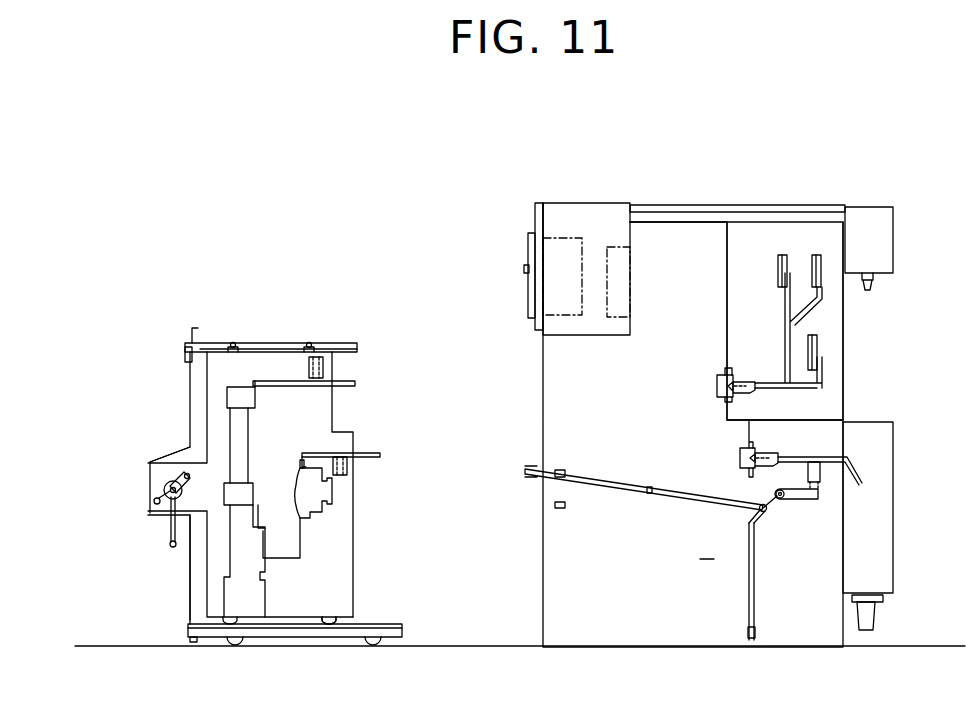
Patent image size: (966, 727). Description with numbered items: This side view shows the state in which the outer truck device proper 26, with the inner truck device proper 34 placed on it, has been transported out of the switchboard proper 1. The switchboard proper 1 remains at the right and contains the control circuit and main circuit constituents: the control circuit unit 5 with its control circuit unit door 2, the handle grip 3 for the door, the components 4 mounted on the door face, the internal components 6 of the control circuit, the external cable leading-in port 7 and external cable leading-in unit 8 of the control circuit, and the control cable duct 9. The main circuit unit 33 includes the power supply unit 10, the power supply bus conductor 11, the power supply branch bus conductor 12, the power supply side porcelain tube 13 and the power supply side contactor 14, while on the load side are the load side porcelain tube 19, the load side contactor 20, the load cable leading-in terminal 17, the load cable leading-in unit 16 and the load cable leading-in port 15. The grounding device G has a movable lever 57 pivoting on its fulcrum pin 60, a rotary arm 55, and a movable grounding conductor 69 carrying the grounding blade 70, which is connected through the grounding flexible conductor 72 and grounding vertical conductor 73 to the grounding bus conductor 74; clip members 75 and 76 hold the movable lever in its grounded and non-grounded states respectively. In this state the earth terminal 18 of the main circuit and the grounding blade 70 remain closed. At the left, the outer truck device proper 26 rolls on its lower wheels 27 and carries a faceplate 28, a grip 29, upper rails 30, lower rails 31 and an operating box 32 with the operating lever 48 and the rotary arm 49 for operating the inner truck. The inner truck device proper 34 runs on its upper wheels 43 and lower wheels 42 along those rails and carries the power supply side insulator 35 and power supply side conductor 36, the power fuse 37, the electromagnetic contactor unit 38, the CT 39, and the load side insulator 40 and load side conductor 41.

The switchboard proper 1 is at (623, 203).
The control circuit unit door 2 is at (535, 218).
The handle grip for the control circuit unit door 3 is at (524, 268).
The components mounted on a door face 4 is at (528, 247).
The control circuit unit 5 is at (580, 203).
The internal components of the control circuit 6 is at (608, 247).
The external cable leading-in port of the control circuit 7 is at (867, 290).
The external cable leading-in unit of the control circuit 8 is at (875, 210).
The control cable duct 9 is at (730, 212).
The power supply unit of the main circuit 10 is at (832, 350).
The power supply bus conductor of the main circuit 11 is at (778, 267).
The power supply branch bus conductor of the main circuit 12 is at (785, 310).
The power supply side porcelain tube of the main circuit 13 is at (738, 372).
The power supply side contactor of the main circuit 14 is at (717, 387).
The load cable leading-in port of the main circuit 15 is at (878, 620).
The load cable leading-in unit of the main circuit 16 is at (880, 425).
The load cable leading-in terminal of the main circuit 17 is at (865, 480).
The earth terminal 18 is at (815, 472).
The load side porcelain tube of the main circuit 19 is at (755, 447).
The load side contactor of the main circuit 20 is at (740, 460).
The outer truck device proper 26 is at (390, 640).
The lower wheel of the outer truck 27 is at (233, 640).
The faceplate 28 is at (190, 387).
The grip 29 is at (185, 352).
The upper rail of the outer truck 30 is at (290, 343).
The lower rail of the outer truck 31 is at (390, 625).
The operating box 32 is at (170, 460).
The main circuit unit 33 is at (684, 233).
The inner truck device proper 34 is at (205, 585).
The power supply side insulator of the inner truck device 35 is at (318, 358).
The power supply side conductor of the inner truck device 36 is at (355, 381).
The power fuse 37 is at (253, 420).
The electromagnetic contactor unit 38 is at (260, 590).
The CT 39 is at (300, 492).
The load side insulator of the inner truck device 40 is at (341, 458).
The load side conductor of the inner truck device 41 is at (380, 453).
The lower wheel of the inner truck 42 is at (327, 627).
The upper wheel of the inner truck 43 is at (233, 346).
The operating lever 48 is at (170, 533).
The rotary arm for operating the inner truck 49 is at (155, 502).
The rotary arm for the grounding device 55 is at (196, 492).
The movable lever for the grounding device 57 is at (667, 488).
The fulcrum pin of the movable lever for the grounding device 60 is at (648, 493).
The movable grounding conductor 69 is at (800, 500).
The grounding blade 70 is at (822, 488).
The grounding flexible conductor 72 is at (760, 518).
The grounding vertical conductor 73 is at (755, 585).
The grounding bus conductor 74 is at (755, 628).
The clip member for the grounded state of the movable lever 75 is at (560, 470).
The clip member for the non-grounded state of the movable lever 76 is at (560, 508).
The grounding device G is at (710, 505).